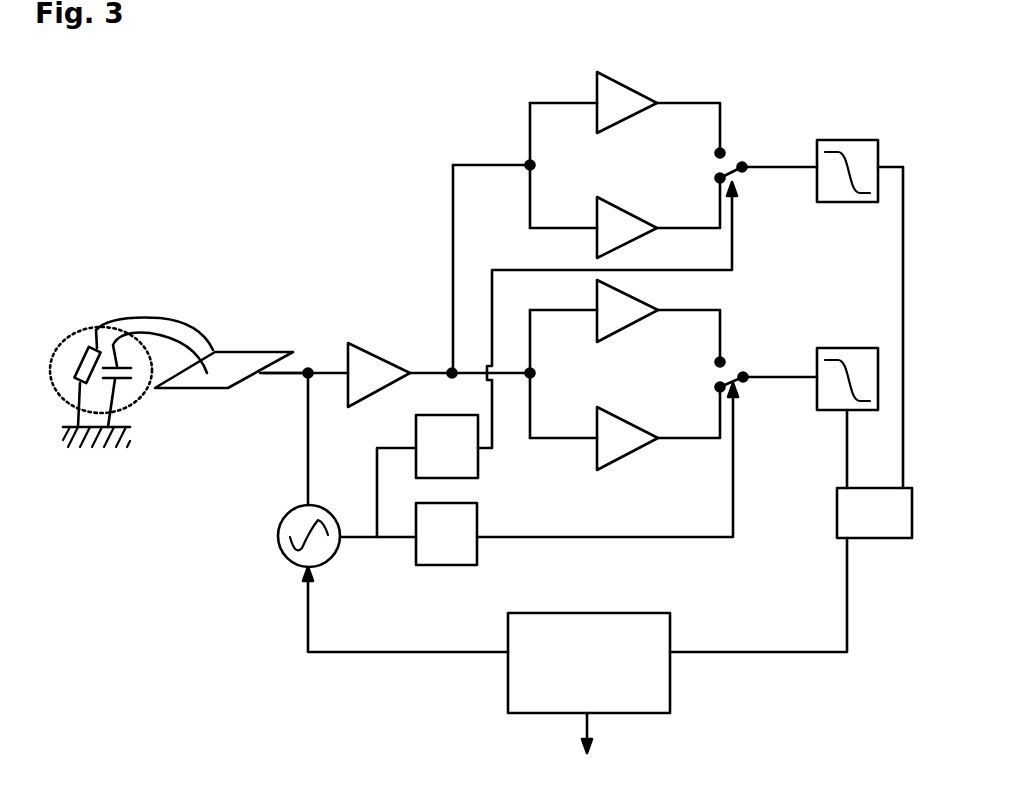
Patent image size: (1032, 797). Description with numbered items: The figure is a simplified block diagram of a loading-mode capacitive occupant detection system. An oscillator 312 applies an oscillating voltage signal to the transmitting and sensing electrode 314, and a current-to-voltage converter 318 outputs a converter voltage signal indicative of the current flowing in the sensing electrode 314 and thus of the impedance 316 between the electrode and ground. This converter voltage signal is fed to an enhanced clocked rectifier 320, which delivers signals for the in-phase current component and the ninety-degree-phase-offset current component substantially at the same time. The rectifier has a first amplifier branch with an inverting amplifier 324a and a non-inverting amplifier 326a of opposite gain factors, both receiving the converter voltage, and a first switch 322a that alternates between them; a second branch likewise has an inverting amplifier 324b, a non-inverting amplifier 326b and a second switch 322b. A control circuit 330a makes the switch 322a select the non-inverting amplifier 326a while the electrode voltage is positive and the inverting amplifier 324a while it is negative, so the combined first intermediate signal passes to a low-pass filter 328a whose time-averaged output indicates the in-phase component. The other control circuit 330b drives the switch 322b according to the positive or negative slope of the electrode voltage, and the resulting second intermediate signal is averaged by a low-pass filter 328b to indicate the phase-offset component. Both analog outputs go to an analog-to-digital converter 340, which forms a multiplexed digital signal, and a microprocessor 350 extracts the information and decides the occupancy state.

The oscillator 312 is at (278, 540).
The transmitting and sensing electrode 314 is at (217, 391).
The impedance 316 is at (96, 327).
The current-to-voltage converter 318 is at (372, 347).
The enhanced clocked rectifier 320 is at (490, 103).
The first switch 322a is at (746, 338).
The second switch 322b is at (752, 190).
The inverting amplifier 324a is at (627, 325).
The inverting amplifier 324b is at (627, 120).
The non-inverting amplifier 326a is at (637, 413).
The non-inverting amplifier 326b is at (633, 203).
The low-pass filter 328a is at (840, 348).
The low-pass filter 328b is at (857, 204).
The control circuit 330a is at (480, 520).
The control circuit 330b is at (480, 463).
The analog-to-digital converter 340 is at (835, 514).
The microprocessor 350 is at (587, 612).